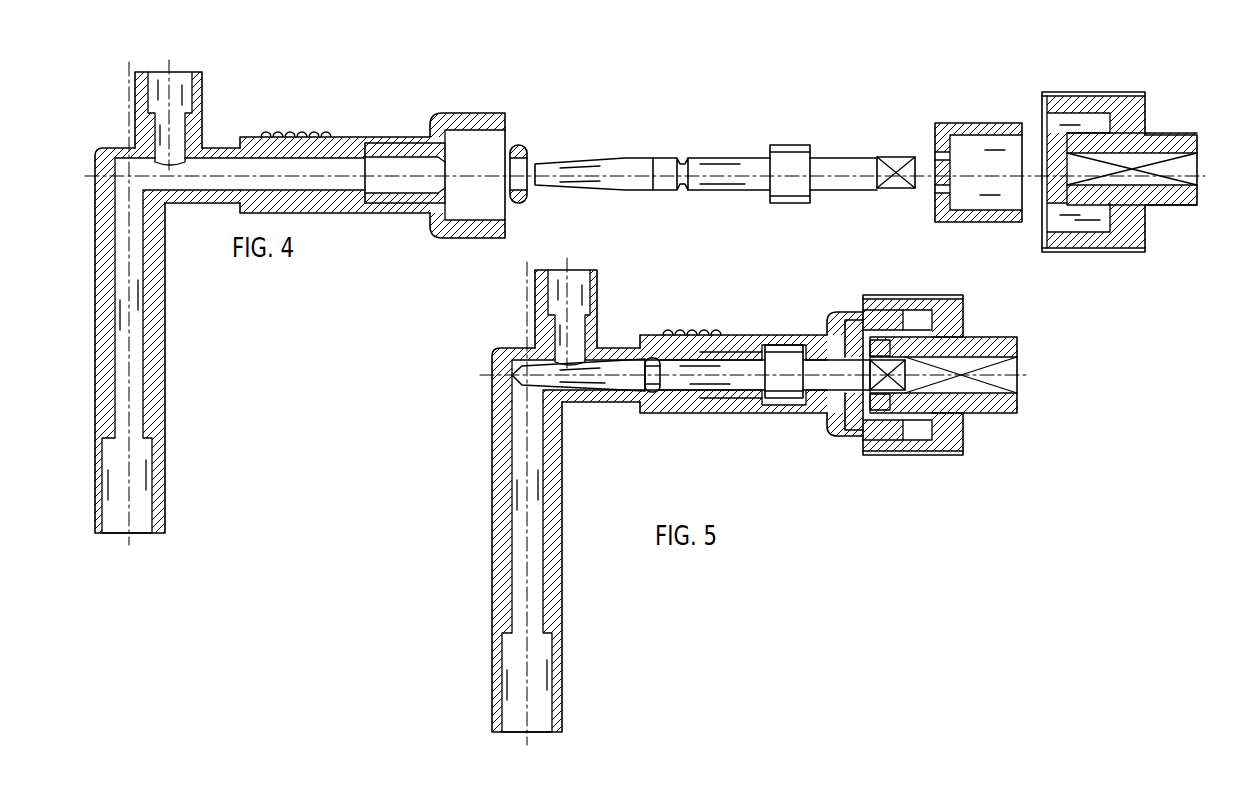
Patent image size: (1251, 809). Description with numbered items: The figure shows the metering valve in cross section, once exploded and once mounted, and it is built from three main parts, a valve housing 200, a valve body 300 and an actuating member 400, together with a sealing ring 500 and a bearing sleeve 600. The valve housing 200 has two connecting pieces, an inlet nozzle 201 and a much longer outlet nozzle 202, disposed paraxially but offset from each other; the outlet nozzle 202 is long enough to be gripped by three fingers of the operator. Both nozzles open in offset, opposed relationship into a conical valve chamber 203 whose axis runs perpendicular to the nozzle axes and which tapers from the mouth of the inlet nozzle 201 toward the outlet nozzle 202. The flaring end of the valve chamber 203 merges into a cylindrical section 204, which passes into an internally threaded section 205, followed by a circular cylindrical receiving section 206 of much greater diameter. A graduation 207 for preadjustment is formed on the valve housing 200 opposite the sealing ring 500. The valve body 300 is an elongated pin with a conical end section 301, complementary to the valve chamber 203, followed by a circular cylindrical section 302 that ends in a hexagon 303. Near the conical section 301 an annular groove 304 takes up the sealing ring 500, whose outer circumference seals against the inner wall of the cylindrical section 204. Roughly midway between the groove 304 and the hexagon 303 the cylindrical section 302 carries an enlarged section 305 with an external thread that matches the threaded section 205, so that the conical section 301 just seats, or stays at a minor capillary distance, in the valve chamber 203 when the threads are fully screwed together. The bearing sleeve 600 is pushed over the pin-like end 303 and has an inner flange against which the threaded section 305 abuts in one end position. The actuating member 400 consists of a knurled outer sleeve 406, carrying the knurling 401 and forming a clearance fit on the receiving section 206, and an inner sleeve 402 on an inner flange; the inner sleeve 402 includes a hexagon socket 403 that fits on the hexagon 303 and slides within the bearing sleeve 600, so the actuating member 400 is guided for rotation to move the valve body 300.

In FIG. 4, the valve housing 200 is at (324, 76).
In FIG. 5, the valve housing 200 is at (494, 330).
In FIG. 4, the inlet nozzle 201 is at (203, 84).
In FIG. 5, the inlet nozzle 201 is at (598, 288).
In FIG. 4, the outlet nozzle 202 is at (152, 472).
In FIG. 5, the outlet nozzle 202 is at (500, 585).
In FIG. 4, the valve chamber 203 is at (216, 150).
In FIG. 5, the valve chamber 203 is at (496, 384).
In FIG. 4, the cylindrical section 204 is at (330, 130).
In FIG. 5, the cylindrical section 204 is at (733, 374).
In FIG. 4, the threaded section 205 is at (408, 135).
In FIG. 5, the threaded section 205 is at (752, 344).
In FIG. 4, the receiving section 206 is at (490, 212).
In FIG. 5, the receiving section 206 is at (845, 374).
In FIG. 4, the graduation 207 is at (317, 130).
In FIG. 5, the graduation 207 is at (700, 330).
In FIG. 4, the valve body 300 is at (740, 118).
In FIG. 5, the valve body 300 is at (708, 415).
In FIG. 4, the conical end section 301 is at (599, 164).
In FIG. 5, the conical end section 301 is at (608, 396).
In FIG. 4, the circular cylindrical section 302 is at (752, 192).
In FIG. 5, the circular cylindrical section 302 is at (712, 404).
In FIG. 4, the hexagon 303 is at (898, 160).
In FIG. 5, the hexagon 303 is at (856, 440).
In FIG. 4, the annular groove 304 is at (681, 158).
In FIG. 4, the externally threaded section 305 is at (797, 204).
In FIG. 5, the externally threaded section 305 is at (785, 410).
In FIG. 4, the actuating member 400 is at (1100, 78).
In FIG. 5, the actuating member 400 is at (1045, 350).
In FIG. 4, the knurling 401 is at (1130, 95).
In FIG. 5, the knurling 401 is at (900, 296).
In FIG. 4, the inner sleeve 402 is at (1165, 206).
In FIG. 5, the inner sleeve 402 is at (996, 418).
In FIG. 4, the hexagon socket 403 is at (1198, 165).
In FIG. 5, the hexagon socket 403 is at (1020, 373).
In FIG. 4, the outer sleeve 406 is at (1052, 254).
In FIG. 5, the outer sleeve 406 is at (880, 294).
In FIG. 4, the sealing ring 500 is at (519, 145).
In FIG. 5, the sealing ring 500 is at (651, 356).
In FIG. 4, the bearing sleeve 600 is at (955, 124).
In FIG. 5, the bearing sleeve 600 is at (885, 456).